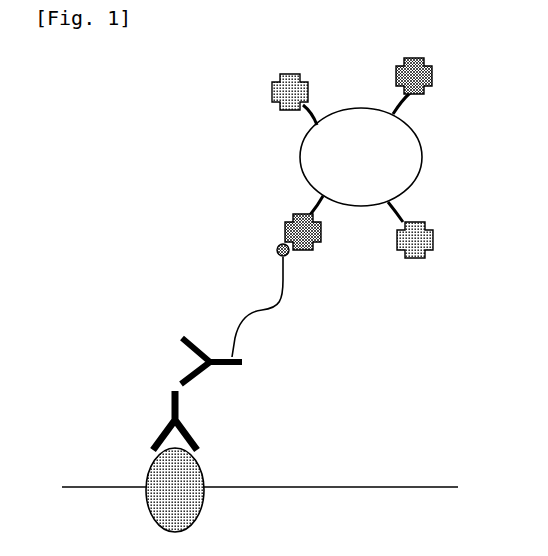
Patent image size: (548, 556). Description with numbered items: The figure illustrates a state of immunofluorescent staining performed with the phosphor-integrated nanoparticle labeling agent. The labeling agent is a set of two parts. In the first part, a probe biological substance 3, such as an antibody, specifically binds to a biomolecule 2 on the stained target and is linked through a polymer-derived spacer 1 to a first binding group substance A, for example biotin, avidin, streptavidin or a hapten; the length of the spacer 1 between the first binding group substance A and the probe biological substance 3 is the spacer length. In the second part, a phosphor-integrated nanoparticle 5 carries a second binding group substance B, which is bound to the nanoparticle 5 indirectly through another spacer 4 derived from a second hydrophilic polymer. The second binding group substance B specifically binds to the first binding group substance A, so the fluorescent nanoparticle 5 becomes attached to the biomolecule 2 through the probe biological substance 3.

The spacer 1 is at (267, 310).
The biomolecule 2 is at (140, 415).
The probe biological substance 3 is at (200, 372).
The spacer 4 is at (400, 213).
The phosphor-integrated nanoparticle 5 is at (423, 157).
The first binding group substance A is at (276, 250).
The second binding group substance B is at (433, 78).